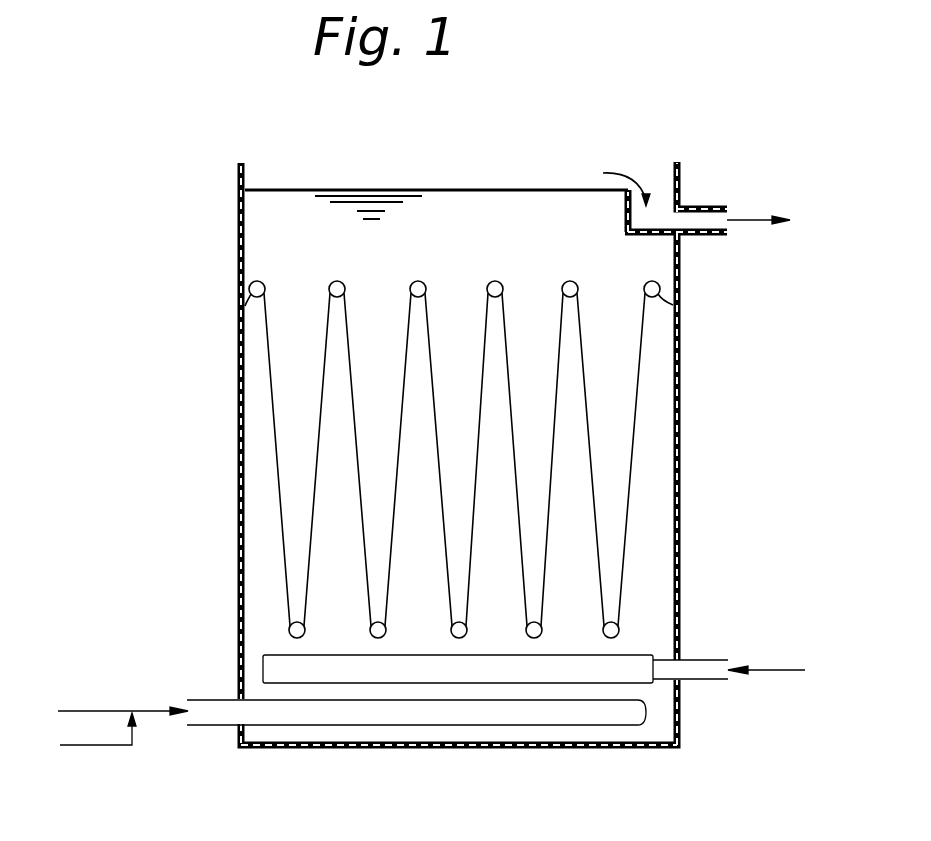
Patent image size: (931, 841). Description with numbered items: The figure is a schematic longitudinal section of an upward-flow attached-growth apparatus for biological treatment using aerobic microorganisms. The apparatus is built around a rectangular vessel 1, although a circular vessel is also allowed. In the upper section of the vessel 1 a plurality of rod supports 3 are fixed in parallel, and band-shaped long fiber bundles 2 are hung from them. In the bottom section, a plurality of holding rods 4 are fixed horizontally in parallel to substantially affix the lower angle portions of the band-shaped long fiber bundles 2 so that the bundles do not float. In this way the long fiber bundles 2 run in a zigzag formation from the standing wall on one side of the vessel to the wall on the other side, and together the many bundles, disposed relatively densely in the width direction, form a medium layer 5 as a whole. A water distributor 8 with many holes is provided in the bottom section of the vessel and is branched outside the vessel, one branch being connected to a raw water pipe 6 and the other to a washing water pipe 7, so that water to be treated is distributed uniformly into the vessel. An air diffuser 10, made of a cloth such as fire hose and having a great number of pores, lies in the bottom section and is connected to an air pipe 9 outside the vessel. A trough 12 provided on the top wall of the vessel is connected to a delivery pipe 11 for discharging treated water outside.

The rectangular vessel 1 is at (237, 412).
The band-shaped long fiber bundles 2 is at (625, 557).
The rod supports 3 is at (657, 297).
The holding rods 4 is at (292, 622).
The medium layer 5 is at (335, 486).
The raw water pipe 6 is at (103, 711).
The washing water pipe 7 is at (95, 745).
The water distributor 8 is at (312, 715).
The air pipe 9 is at (773, 670).
The air diffuser 10 is at (635, 678).
The delivery pipe 11 is at (748, 218).
The trough 12 is at (653, 234).